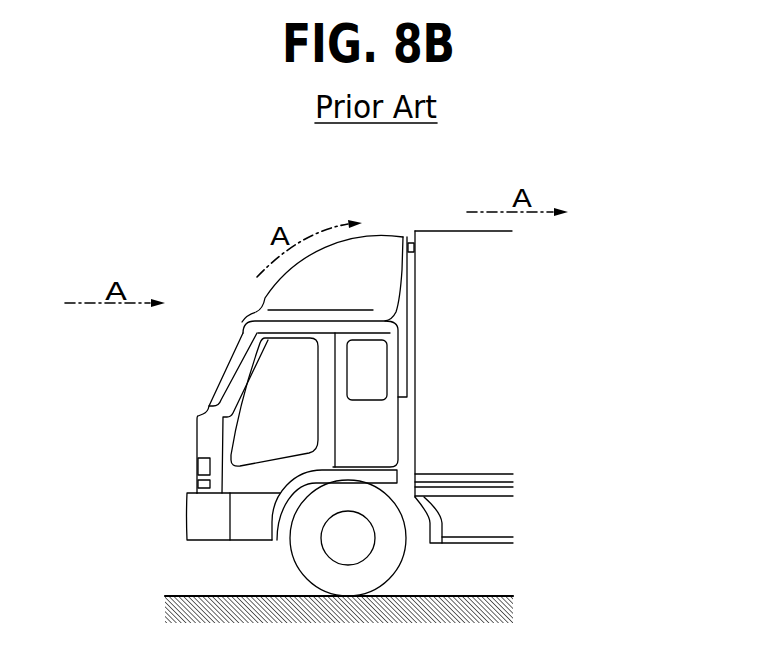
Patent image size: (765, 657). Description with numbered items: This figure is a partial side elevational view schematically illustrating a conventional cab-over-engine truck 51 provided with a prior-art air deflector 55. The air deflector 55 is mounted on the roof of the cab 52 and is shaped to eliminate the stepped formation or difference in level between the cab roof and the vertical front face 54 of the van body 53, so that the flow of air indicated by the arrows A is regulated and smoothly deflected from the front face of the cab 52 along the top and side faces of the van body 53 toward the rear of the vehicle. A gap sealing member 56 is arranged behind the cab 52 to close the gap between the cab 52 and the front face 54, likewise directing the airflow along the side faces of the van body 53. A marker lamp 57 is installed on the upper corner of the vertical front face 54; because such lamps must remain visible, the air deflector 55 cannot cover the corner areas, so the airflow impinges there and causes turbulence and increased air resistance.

The truck 51 is at (178, 232).
The cab 52 is at (207, 430).
The van body 53 is at (497, 252).
The vertical front face 54 is at (415, 272).
The air deflector 55 is at (330, 275).
The gap sealing member 56 is at (392, 325).
The marker lamp 57 is at (410, 241).